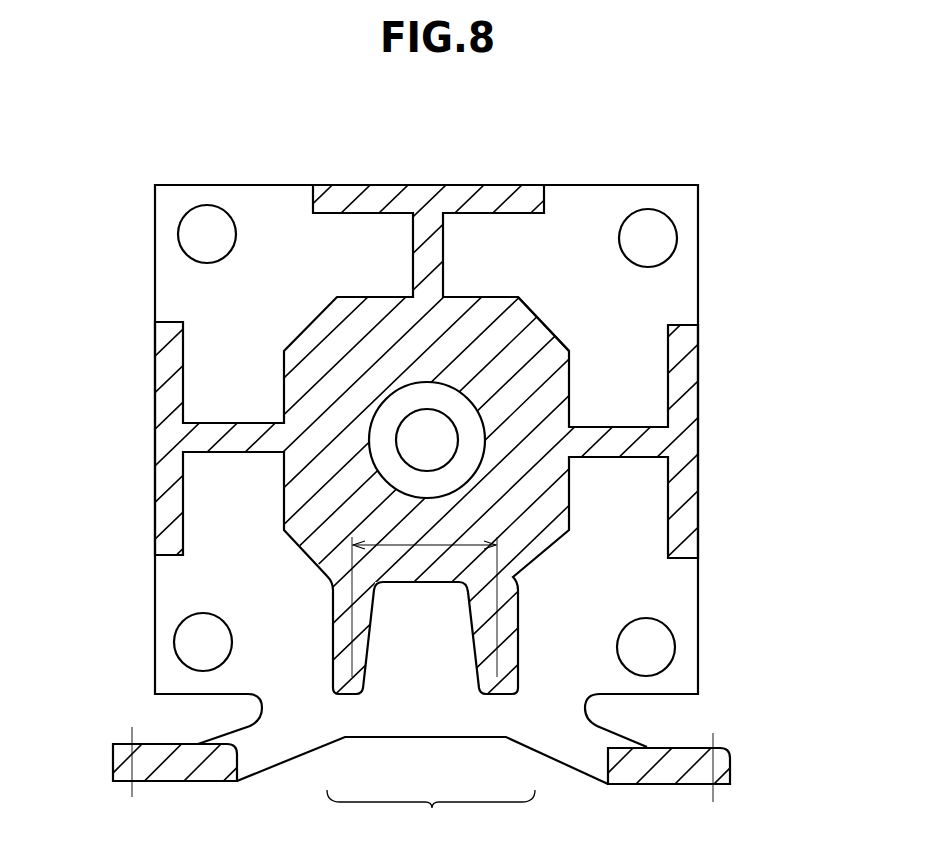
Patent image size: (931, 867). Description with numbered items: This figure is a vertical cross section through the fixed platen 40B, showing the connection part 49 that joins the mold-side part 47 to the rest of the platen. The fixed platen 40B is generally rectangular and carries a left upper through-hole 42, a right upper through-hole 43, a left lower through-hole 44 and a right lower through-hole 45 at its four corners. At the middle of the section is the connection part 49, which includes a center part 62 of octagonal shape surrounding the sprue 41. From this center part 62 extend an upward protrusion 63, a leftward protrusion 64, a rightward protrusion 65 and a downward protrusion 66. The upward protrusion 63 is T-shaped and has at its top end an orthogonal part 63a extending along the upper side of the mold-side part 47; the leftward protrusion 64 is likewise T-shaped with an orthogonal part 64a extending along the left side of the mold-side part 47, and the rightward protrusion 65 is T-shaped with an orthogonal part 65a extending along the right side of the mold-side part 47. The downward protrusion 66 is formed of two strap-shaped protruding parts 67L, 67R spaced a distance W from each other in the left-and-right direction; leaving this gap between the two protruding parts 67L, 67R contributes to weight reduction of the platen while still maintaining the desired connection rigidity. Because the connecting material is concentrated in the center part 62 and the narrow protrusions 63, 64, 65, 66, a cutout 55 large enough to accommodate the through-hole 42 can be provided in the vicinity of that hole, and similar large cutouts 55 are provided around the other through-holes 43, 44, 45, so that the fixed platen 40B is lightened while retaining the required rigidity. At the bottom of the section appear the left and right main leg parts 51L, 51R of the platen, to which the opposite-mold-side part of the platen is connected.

The fixed platen 40B is at (695, 163).
The sprue 41 is at (452, 449).
The left upper through-hole 42 is at (205, 233).
The right upper through-hole 43 is at (650, 238).
The left lower through-hole 44 is at (202, 640).
The right lower through-hole 45 is at (646, 647).
The mold-side part 47 is at (258, 182).
The connection part 49 is at (534, 306).
The left main leg part 51L is at (122, 756).
The right main leg part 51R is at (723, 761).
The cutout 55 is at (230, 298).
The center part 62 is at (330, 340).
The upward protrusion 63 is at (430, 228).
The orthogonal part 63a is at (492, 200).
The leftward protrusion 64 is at (202, 436).
The orthogonal part 64a is at (168, 369).
The rightward protrusion 65 is at (628, 442).
The orthogonal part 65a is at (685, 375).
The downward protrusion 66 is at (432, 808).
The left strap-shaped protruding part 67L is at (352, 678).
The right strap-shaped protruding part 67R is at (495, 678).